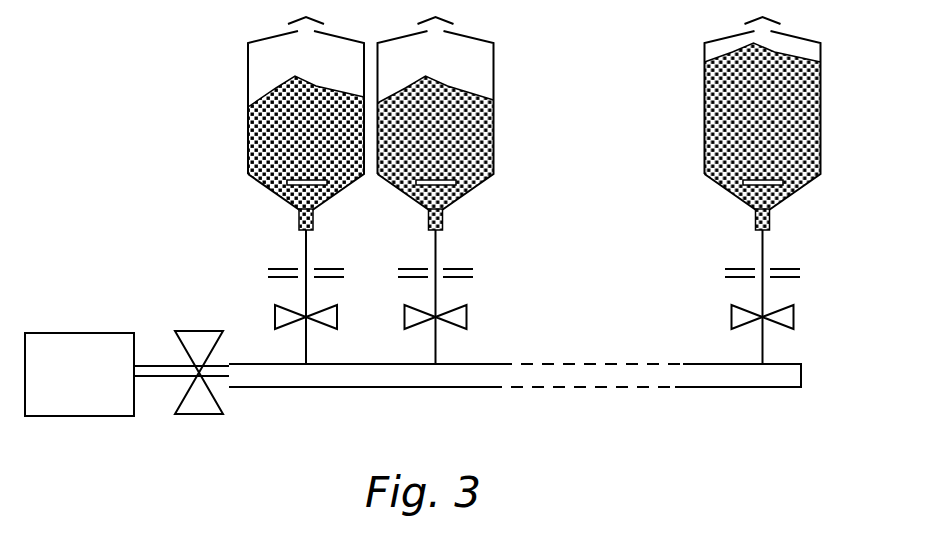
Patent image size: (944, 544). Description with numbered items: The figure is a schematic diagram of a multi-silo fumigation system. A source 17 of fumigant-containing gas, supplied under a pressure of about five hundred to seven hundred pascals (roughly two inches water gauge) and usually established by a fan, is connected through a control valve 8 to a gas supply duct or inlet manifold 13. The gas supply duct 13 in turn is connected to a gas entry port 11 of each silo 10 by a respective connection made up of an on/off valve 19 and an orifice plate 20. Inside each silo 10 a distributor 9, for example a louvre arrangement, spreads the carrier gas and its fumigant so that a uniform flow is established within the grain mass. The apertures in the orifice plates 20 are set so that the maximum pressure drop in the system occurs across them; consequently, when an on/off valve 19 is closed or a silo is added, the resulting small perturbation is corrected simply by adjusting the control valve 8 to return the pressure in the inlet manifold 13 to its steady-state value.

The control valve 8 is at (200, 403).
The distributor 9 is at (303, 173).
The silo 10 is at (278, 68).
The gas entry port 11 is at (299, 218).
The gas supply duct or inlet manifold 13 is at (317, 382).
The source of fumigant-containing gas 17 is at (90, 333).
The on/off valve 19 is at (282, 317).
The orifice plate 20 is at (280, 267).